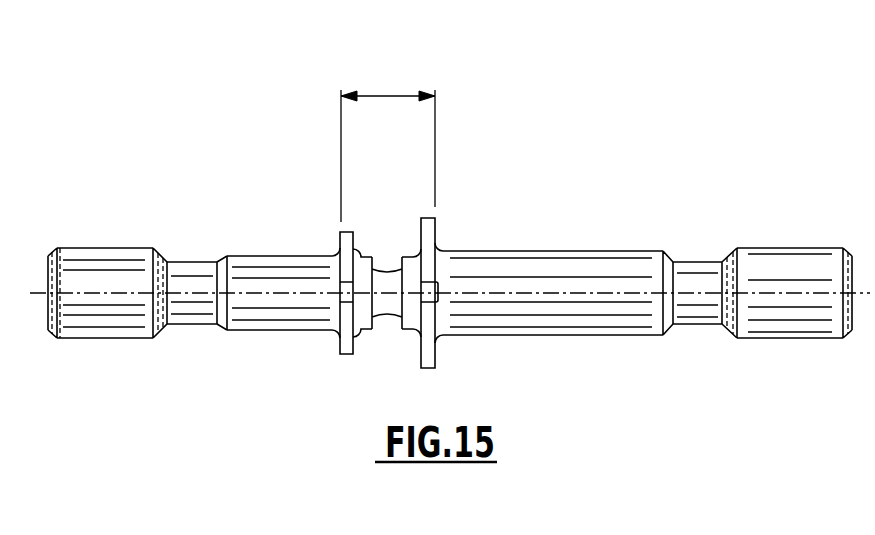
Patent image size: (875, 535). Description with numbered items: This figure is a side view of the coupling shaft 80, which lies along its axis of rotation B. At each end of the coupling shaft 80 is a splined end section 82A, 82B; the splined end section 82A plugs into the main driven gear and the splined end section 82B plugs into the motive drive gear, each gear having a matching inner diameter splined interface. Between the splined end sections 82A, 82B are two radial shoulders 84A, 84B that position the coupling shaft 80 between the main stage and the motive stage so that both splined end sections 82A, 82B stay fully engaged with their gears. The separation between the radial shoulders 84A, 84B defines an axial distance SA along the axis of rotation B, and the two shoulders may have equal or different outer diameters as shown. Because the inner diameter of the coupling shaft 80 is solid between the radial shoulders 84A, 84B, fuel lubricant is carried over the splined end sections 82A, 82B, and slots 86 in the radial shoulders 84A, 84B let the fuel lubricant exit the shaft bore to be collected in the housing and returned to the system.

The coupling shaft 80 is at (450, 211).
The splined end section 82A is at (784, 247).
The splined end section 82B is at (91, 266).
The radial shoulder 84A is at (429, 228).
The radial shoulder 84B is at (345, 240).
The slots 86 is at (423, 298).
The axis of rotation B is at (255, 294).
The axial distance SA is at (390, 95).